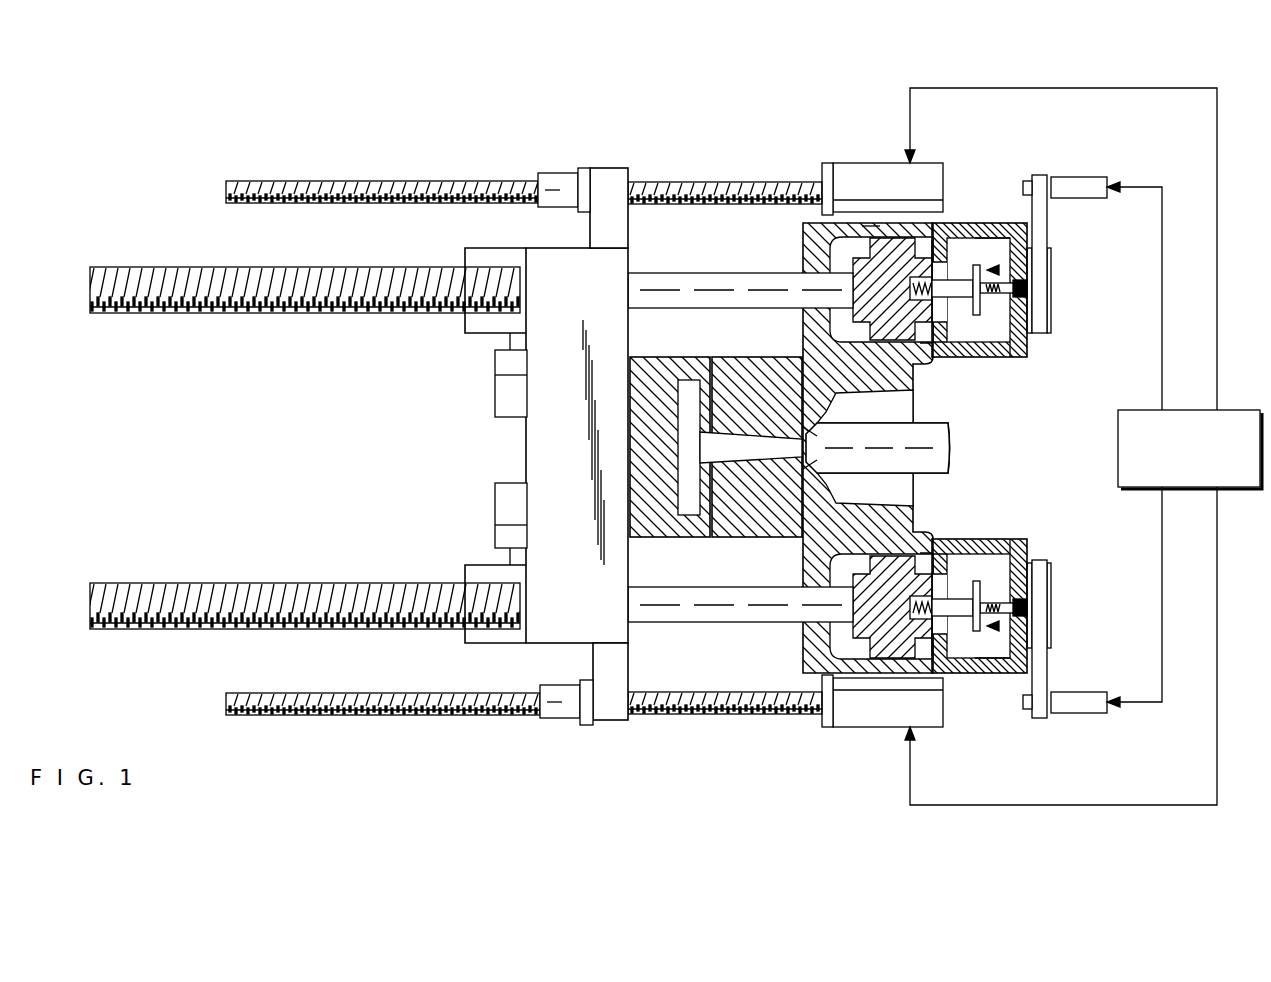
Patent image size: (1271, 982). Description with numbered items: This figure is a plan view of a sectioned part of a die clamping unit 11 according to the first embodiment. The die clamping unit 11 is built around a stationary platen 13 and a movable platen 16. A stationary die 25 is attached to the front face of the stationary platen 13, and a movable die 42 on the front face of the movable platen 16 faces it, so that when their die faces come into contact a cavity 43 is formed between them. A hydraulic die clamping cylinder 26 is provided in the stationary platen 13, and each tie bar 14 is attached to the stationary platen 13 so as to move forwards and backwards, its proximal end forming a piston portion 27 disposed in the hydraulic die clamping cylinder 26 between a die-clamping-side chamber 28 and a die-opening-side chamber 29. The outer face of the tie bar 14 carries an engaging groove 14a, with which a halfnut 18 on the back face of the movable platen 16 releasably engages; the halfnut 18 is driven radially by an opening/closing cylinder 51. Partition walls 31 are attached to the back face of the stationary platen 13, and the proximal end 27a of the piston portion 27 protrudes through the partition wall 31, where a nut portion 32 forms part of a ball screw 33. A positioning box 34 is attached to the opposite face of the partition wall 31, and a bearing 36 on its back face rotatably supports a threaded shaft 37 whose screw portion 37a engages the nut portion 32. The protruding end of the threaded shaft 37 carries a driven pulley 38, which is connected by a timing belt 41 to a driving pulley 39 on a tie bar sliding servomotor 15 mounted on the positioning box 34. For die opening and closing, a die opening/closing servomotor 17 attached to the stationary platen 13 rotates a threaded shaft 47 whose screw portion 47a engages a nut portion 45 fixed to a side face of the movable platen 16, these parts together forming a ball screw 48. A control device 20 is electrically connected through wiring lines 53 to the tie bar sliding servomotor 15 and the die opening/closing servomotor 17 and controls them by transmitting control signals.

The die clamping unit 11 is at (726, 88).
The stationary platen 13 is at (862, 225).
The tie bar 14 is at (693, 273).
The engaging groove 14a is at (178, 267).
The tie bar sliding servomotor 15 is at (1078, 177).
The movable platen 16 is at (548, 643).
The die opening/closing servomotor 17 is at (853, 163).
The halfnut 18 is at (490, 333).
The control device 20 is at (1240, 410).
The stationary die 25 is at (742, 537).
The hydraulic die clamping cylinder 26 is at (806, 582).
The piston portion 27 is at (905, 245).
The proximal end 27a is at (945, 345).
The die-clamping-side chamber 28 is at (803, 248).
The die-opening-side chamber 29 is at (927, 345).
The partition wall 31 is at (940, 235).
The nut portion 32 is at (975, 320).
The ball screw 33 is at (1000, 270).
The positioning box 34 is at (1027, 355).
The bearing 36 is at (1022, 290).
The threaded shaft 37 is at (1010, 345).
The screw portion 37a is at (975, 238).
The driven pulley 38 is at (1051, 316).
The driving pulley 39 is at (1027, 182).
The timing belt 41 is at (1047, 216).
The movable die 42 is at (666, 537).
The cavity 43 is at (700, 372).
The nut portion 45 is at (553, 173).
The threaded shaft 47 is at (793, 182).
The screw portion 47a is at (430, 181).
The ball screw 48 is at (611, 156).
The opening/closing cylinder 51 is at (495, 404).
The wiring line 53 is at (1217, 253).